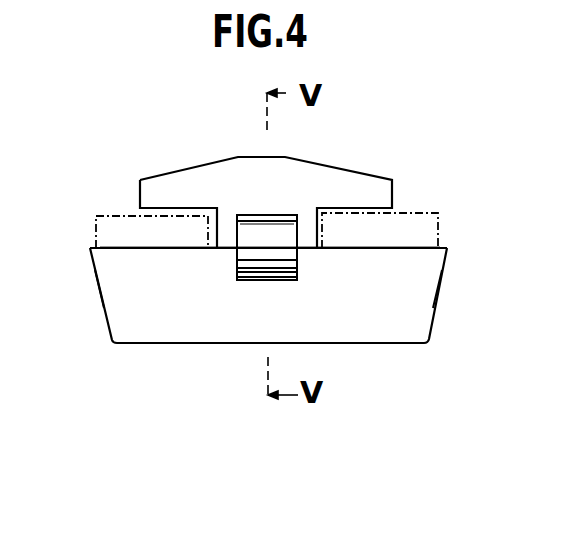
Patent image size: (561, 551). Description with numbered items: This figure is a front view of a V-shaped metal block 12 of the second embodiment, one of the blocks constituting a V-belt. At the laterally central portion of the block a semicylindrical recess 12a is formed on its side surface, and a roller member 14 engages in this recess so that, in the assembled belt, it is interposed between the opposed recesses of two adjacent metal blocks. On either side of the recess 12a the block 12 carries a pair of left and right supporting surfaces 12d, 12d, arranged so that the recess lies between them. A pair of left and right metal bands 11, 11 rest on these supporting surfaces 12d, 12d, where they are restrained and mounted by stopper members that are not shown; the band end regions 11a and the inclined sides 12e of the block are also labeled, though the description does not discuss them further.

The metal band 11 is at (110, 213).
The lead end portion 11a is at (157, 249).
The V-shaped metal block 12 is at (235, 166).
The semicylindrical recess 12a is at (288, 226).
The supporting surface 12d is at (100, 247).
The inclined side wall 12e is at (100, 313).
The roller member 14 is at (257, 232).